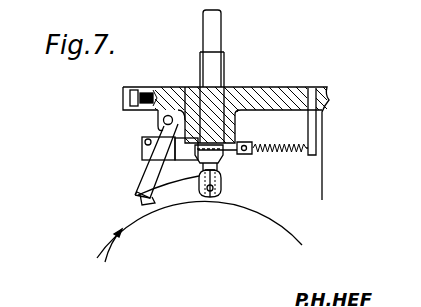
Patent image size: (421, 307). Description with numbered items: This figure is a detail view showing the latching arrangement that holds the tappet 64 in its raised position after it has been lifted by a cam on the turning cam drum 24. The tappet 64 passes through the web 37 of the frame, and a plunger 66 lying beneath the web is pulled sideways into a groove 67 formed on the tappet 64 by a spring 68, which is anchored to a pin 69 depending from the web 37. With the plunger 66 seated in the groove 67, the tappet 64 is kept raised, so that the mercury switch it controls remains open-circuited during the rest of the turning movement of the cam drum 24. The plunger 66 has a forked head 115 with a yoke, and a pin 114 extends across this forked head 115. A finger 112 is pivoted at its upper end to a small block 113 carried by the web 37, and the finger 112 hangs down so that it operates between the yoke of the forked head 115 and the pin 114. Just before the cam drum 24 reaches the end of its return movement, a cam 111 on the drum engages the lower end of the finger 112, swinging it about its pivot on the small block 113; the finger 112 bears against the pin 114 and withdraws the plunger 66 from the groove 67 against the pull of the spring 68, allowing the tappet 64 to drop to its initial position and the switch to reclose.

The web 37 is at (291, 100).
The tappet 64 is at (210, 65).
The small block 113 is at (163, 119).
The finger 112 is at (138, 197).
The pin 114 is at (142, 143).
The forked head 115 is at (143, 157).
The groove 67 is at (224, 169).
The spring 68 is at (280, 147).
The pin 69 is at (314, 140).
The plunger 66 is at (183, 143).
The cam 111 is at (170, 203).
The cam drum 24 is at (113, 248).